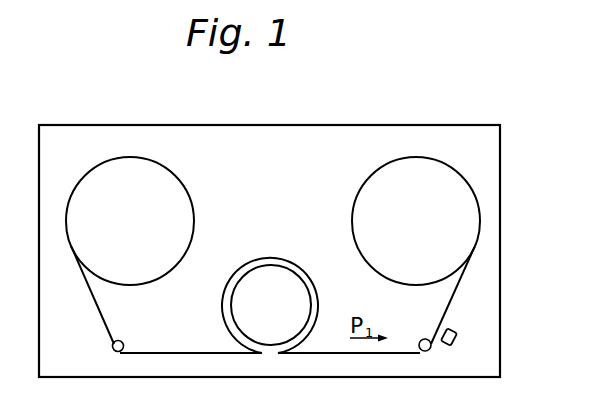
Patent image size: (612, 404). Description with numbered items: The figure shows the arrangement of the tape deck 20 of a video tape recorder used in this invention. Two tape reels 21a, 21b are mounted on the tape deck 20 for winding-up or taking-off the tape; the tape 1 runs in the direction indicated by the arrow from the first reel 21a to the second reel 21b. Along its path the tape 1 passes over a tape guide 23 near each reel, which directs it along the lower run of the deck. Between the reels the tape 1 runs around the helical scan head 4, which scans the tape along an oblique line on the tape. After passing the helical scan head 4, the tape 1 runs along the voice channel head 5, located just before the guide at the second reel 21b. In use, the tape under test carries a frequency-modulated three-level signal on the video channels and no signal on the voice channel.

The tape deck 20 is at (474, 127).
The first tape reel 21a is at (177, 196).
The second tape reel 21b is at (375, 192).
The helical scan head 4 is at (272, 286).
The tape 1 is at (191, 352).
The tape guide 23 is at (122, 342).
The voice channel head 5 is at (459, 333).